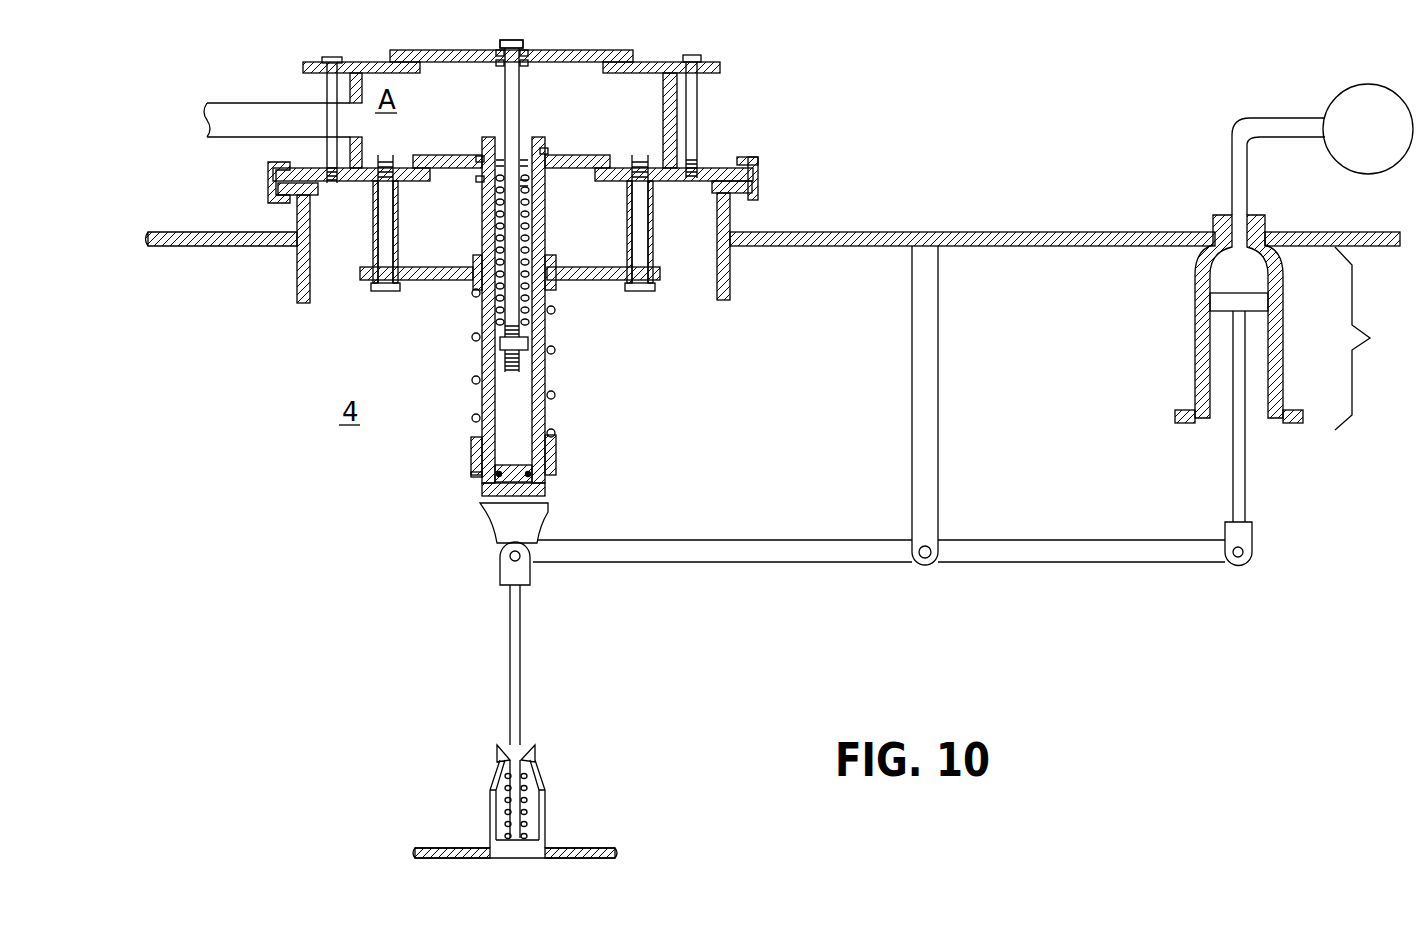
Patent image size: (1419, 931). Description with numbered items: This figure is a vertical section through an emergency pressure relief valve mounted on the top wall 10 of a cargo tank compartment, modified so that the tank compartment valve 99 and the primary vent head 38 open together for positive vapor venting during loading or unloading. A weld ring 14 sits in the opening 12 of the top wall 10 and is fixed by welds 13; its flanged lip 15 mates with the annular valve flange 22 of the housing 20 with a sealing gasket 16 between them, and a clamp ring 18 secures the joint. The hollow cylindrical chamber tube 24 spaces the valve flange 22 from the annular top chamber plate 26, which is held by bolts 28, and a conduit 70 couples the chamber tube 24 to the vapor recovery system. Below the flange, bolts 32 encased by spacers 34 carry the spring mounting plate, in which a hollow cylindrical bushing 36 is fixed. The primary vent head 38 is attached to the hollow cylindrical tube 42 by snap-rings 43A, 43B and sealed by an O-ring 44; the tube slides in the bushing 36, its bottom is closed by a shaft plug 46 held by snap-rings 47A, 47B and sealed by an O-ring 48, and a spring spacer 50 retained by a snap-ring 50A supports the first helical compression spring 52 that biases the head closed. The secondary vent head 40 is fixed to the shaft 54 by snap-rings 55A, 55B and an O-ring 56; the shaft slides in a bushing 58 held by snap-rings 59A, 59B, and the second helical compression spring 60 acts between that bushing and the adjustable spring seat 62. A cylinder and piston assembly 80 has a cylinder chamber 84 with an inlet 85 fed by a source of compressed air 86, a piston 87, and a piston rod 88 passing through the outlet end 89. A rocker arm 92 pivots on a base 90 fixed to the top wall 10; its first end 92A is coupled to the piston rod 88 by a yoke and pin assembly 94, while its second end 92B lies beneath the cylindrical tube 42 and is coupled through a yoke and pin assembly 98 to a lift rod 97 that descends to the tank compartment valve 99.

The top wall 10 is at (1032, 232).
The opening 12 is at (694, 275).
The welds 13 is at (297, 238).
The weld ring 14 is at (310, 235).
The flanged lip 15 is at (290, 193).
The sealing gasket 16 is at (316, 181).
The clamp ring 18 is at (268, 175).
The housing 20 is at (745, 120).
The annular valve flange 22 is at (720, 172).
The hollow cylindrical chamber tube 24 is at (663, 102).
The annular top chamber plate 26 is at (650, 62).
The bolts 28 is at (327, 95).
The bolt 32 is at (378, 258).
The spacer 34 is at (398, 242).
The hollow cylindrical bushing 36 is at (556, 285).
The primary vent head 38 is at (590, 168).
The secondary vent head 40 is at (606, 50).
The hollow cylindrical tube 42 is at (540, 237).
The snap-ring 43A is at (478, 156).
The snap-ring 43B is at (478, 182).
The O-ring 44 is at (549, 155).
The shaft plug 46 is at (536, 508).
The snap-ring 47A is at (472, 450).
The snap-ring 47B is at (495, 495).
The O-ring 48 is at (532, 478).
The hollow cylindrical spring spacer 50 is at (556, 455).
The snap-ring 50A is at (475, 478).
The first helical compression spring 52 is at (555, 352).
The shaft 54 is at (505, 108).
The snap-ring 55A is at (498, 50).
The snap-ring 55B is at (498, 65).
The O-ring 56 is at (522, 50).
The bushing 58 is at (540, 170).
The snap-ring 59A is at (535, 155).
The snap-ring 59B is at (535, 205).
The second helical compression spring 60 is at (496, 220).
The adjustable spring seat 62 is at (500, 348).
The conduit 70 is at (230, 103).
The cylinder and piston assembly 80 is at (1373, 338).
The cylinder chamber 84 is at (1212, 275).
The inlet 85 is at (1232, 200).
The source of compressed air 86 is at (1338, 112).
The piston 87 is at (1260, 303).
The piston rod 88 is at (1245, 462).
The outlet end 89 is at (1210, 423).
The base 90 is at (912, 370).
The rocker arm 92 is at (792, 565).
The first end 92A is at (1225, 565).
The second end 92B is at (532, 562).
The yoke and pin assembly 94 is at (1252, 545).
The lift rod 97 is at (510, 658).
The yoke and pin assembly 98 is at (504, 578).
The tank compartment valve 99 is at (562, 848).